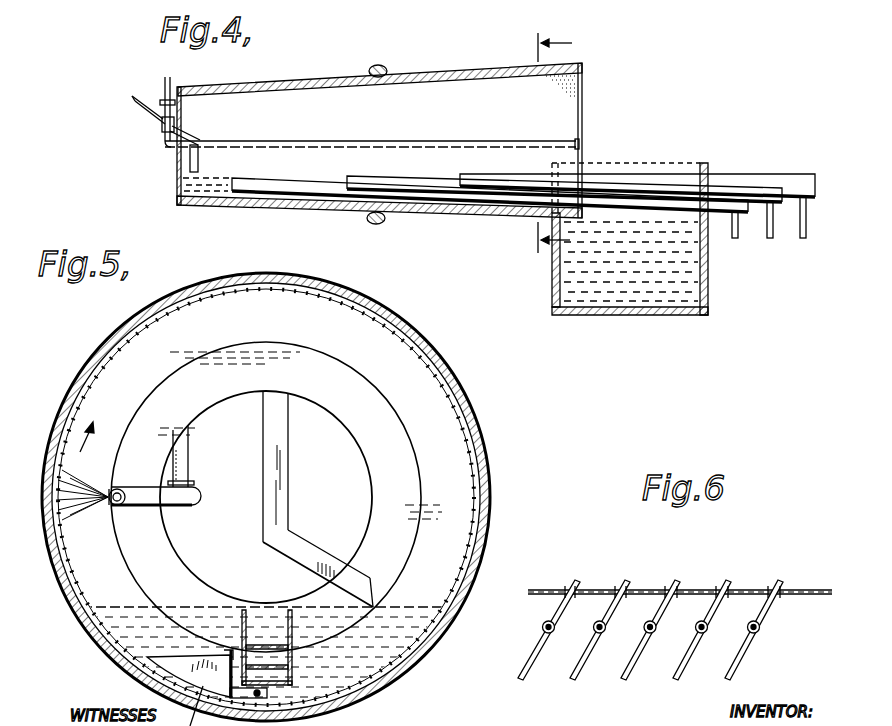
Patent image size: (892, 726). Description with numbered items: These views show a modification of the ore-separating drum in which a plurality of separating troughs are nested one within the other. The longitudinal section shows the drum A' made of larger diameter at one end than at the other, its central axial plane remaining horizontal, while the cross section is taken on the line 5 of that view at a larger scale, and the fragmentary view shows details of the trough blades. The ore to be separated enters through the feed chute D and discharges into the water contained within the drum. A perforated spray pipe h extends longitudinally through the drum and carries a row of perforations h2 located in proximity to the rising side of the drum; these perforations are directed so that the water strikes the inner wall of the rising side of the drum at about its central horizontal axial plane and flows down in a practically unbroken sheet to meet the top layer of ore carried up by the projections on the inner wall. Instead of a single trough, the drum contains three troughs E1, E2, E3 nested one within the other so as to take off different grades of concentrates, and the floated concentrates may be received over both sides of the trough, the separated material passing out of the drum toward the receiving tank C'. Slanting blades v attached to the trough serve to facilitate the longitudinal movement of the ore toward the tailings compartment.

In FIG. 4, the rotary drum A' is at (379, 136).
In FIG. 5, the rotary drum A' is at (271, 499).
In FIG. 4, the perforated spray pipe h is at (397, 142).
In FIG. 5, the perforated spray pipe h is at (145, 486).
In FIG. 4, the row of perforations h2 is at (340, 142).
In FIG. 5, the row of perforations h2 is at (110, 506).
In FIG. 4, the feed chute D is at (199, 160).
In FIG. 5, the feed chute D is at (320, 560).
In FIG. 4, the trough E1 is at (535, 182).
In FIG. 5, the trough E1 is at (268, 644).
In FIG. 4, the trough E2 is at (403, 182).
In FIG. 5, the trough E2 is at (276, 663).
In FIG. 4, the trough E3 is at (299, 184).
In FIG. 5, the trough E3 is at (276, 680).
In FIG. 4, the collecting tank C' is at (679, 239).
In FIG. 4, the section line 5 is at (545, 143).
In FIG. 6, the slanting blades v is at (533, 670).